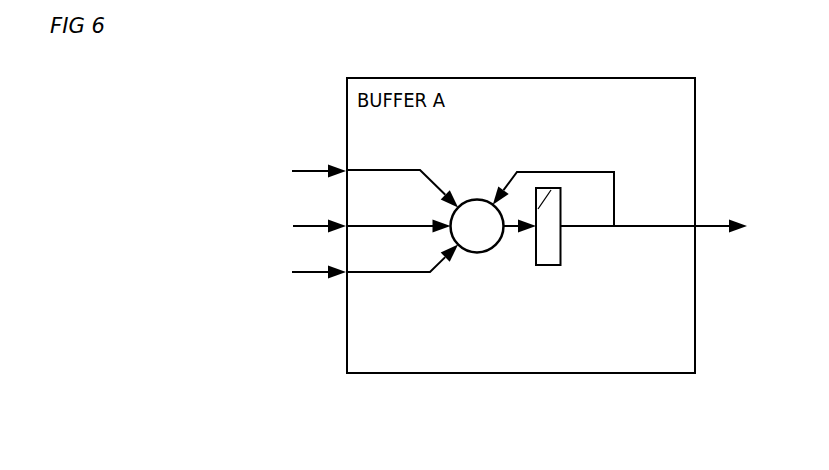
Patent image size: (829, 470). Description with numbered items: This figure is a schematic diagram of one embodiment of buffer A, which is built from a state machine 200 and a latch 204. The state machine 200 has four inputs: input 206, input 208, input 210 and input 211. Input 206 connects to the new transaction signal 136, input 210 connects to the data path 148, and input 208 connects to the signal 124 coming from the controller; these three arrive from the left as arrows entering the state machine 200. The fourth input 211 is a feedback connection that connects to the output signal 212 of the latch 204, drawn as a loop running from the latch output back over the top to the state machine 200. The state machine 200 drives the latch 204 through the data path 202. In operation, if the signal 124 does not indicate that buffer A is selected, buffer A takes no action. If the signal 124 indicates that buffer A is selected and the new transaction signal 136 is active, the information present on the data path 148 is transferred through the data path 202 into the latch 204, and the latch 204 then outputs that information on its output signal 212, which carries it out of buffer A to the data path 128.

The new transaction signal 136 is at (303, 166).
The signal from controller 124 is at (297, 222).
The data path 148 is at (312, 276).
The input 206 is at (417, 167).
The input 208 is at (408, 222).
The input 210 is at (414, 278).
The state machine 200 is at (479, 199).
The data path 202 is at (517, 233).
The latch 204 is at (562, 246).
The input 211 is at (578, 171).
The output signal 212 is at (647, 224).
The data path 128 is at (708, 225).